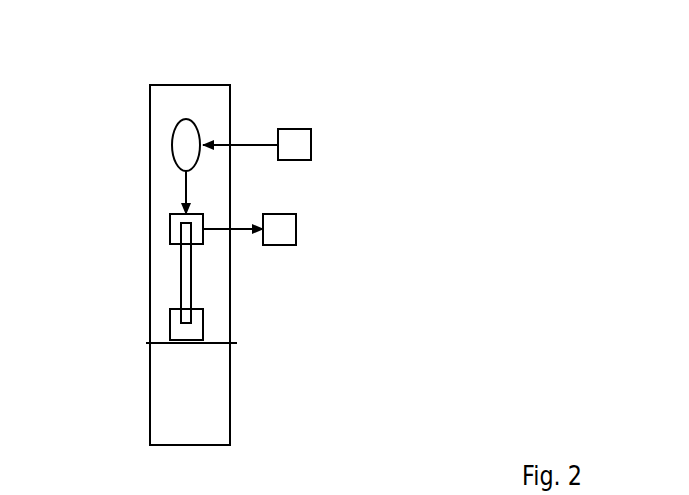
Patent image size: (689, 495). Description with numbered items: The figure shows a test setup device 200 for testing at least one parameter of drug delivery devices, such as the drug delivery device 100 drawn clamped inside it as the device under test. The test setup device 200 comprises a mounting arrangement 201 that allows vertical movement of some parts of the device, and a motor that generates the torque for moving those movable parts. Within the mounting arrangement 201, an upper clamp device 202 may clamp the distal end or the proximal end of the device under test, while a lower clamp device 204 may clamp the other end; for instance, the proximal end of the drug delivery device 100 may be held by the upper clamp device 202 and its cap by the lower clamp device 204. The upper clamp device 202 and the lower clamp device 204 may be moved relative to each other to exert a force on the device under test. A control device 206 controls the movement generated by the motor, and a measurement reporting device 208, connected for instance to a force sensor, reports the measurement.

The test setup device 200 is at (219, 223).
The mounting arrangement 201 is at (230, 387).
The upper clamp device 202 is at (170, 222).
The drug delivery device 100 is at (181, 263).
The lower clamp device 204 is at (170, 323).
The control device 206 is at (295, 128).
The measurement reporting device 208 is at (296, 228).